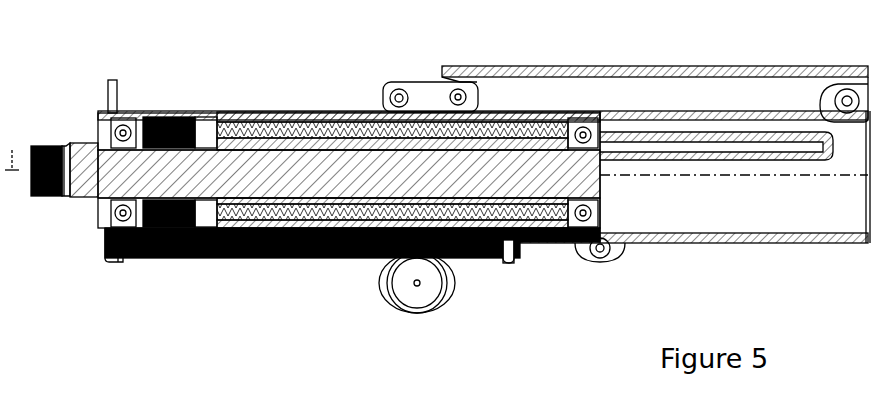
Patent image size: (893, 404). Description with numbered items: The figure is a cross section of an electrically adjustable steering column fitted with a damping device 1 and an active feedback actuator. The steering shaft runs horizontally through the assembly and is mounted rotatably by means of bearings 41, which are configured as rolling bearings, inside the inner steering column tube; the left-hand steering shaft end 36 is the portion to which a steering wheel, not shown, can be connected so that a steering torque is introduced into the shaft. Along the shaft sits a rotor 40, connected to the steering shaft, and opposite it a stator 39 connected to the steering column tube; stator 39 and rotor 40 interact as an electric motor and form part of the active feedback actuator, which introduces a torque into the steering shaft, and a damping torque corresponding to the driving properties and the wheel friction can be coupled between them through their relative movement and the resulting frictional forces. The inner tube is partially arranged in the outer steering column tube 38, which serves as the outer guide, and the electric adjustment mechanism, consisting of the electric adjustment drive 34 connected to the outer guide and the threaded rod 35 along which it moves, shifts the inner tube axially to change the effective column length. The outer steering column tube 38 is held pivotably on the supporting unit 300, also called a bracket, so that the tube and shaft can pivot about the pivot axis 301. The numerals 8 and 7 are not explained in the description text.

The axis indicator 8 is at (12, 153).
The steering shaft end 36 is at (48, 146).
The damping device 1 is at (153, 117).
The bearing frame 7 is at (216, 113).
The bearings 41 is at (128, 118).
The rotor 40 is at (303, 112).
The stator 39 is at (347, 113).
The threaded rod 35 is at (287, 258).
The outer steering column tube 38 is at (714, 243).
The electric adjustment drive 34 is at (462, 285).
The supporting unit 300 is at (665, 67).
The pivot axis 301 is at (843, 84).